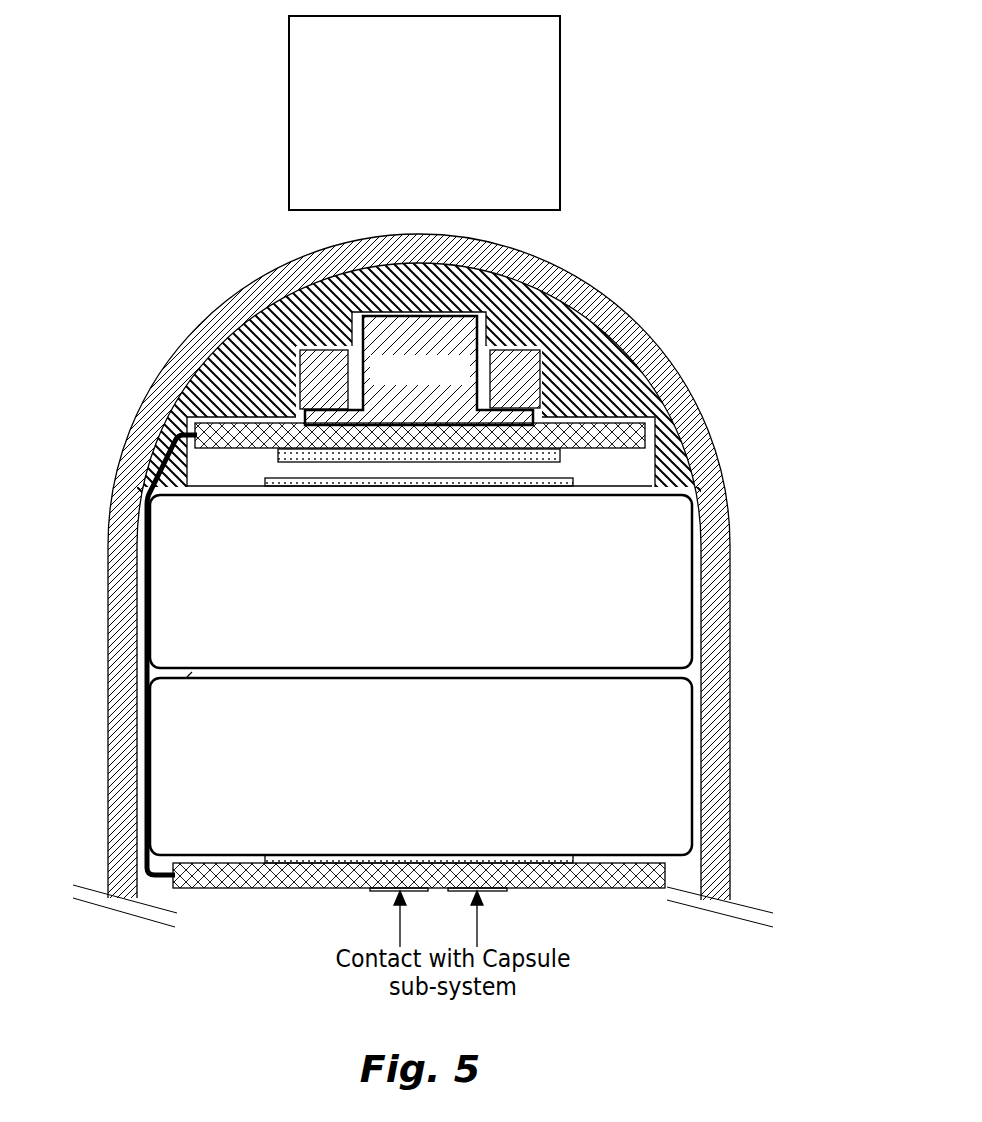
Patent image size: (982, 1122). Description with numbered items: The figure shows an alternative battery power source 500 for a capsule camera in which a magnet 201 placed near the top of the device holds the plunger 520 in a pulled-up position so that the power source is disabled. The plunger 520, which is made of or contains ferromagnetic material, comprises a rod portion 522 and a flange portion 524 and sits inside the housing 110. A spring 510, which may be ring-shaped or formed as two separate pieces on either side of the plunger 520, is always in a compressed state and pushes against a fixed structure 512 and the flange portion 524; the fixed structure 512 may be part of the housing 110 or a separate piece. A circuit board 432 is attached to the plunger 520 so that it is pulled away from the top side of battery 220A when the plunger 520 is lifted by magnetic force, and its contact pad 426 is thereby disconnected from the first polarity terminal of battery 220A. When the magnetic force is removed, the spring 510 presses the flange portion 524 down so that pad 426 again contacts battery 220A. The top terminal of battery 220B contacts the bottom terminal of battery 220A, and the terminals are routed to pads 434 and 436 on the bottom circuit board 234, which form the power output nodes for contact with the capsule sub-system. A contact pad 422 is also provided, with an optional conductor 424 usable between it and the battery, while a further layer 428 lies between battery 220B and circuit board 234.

The magnet 201 is at (560, 112).
The battery power source 500 is at (695, 204).
The housing 110 is at (558, 268).
The plunger 520 is at (419, 309).
The rod portion 522 is at (448, 338).
The spring 510 is at (523, 395).
The fixed structure 512 is at (522, 356).
The flange portion 524 is at (515, 417).
The circuit board 432 is at (647, 437).
The contact pad 426 is at (560, 461).
The contact pad 422 is at (573, 482).
The conductor 424 is at (157, 465).
The battery 220A is at (692, 585).
The battery 220B is at (692, 770).
The bottom layer 428 is at (575, 859).
The circuit board 234 is at (665, 875).
The pad 434 is at (378, 889).
The pad 436 is at (492, 888).